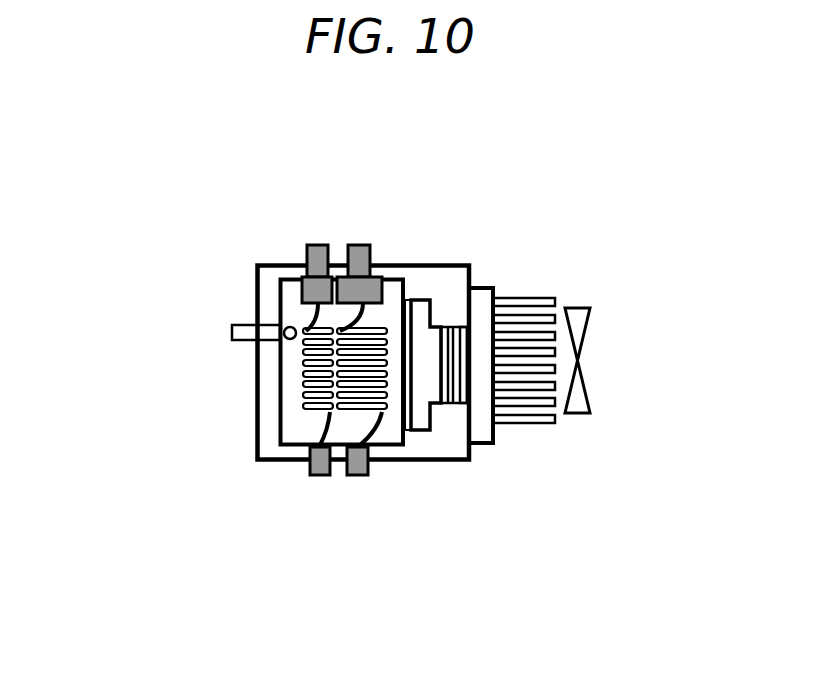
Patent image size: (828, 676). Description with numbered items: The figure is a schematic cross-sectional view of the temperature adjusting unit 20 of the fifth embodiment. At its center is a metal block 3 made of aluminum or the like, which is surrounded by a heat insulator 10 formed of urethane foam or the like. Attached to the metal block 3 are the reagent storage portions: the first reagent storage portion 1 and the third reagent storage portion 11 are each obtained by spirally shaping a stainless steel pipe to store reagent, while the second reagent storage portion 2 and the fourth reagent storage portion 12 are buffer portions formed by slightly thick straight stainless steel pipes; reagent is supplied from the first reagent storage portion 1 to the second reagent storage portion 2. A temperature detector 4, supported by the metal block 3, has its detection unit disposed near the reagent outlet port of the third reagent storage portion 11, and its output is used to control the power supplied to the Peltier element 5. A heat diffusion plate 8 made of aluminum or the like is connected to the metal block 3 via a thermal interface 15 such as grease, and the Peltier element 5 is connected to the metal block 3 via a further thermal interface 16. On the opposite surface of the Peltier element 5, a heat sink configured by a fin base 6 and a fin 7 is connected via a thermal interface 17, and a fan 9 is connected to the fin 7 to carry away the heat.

The temperature adjusting unit 20 is at (120, 156).
The heat insulator 10 is at (303, 363).
The metal block 3 is at (325, 426).
The second reagent storage portion 2 is at (364, 290).
The fourth reagent storage portion 12 is at (321, 226).
The temperature detector 4 is at (245, 252).
The third reagent storage portion 11 is at (235, 374).
The first reagent storage portion 1 is at (350, 458).
The thermal interface 15 is at (428, 286).
The heat diffusion plate 8 is at (407, 450).
The thermal interface 16 is at (434, 448).
The thermal interface 17 is at (457, 293).
The Peltier element 5 is at (482, 426).
The fin base 6 is at (532, 405).
The fin 7 is at (553, 329).
The fan 9 is at (612, 360).